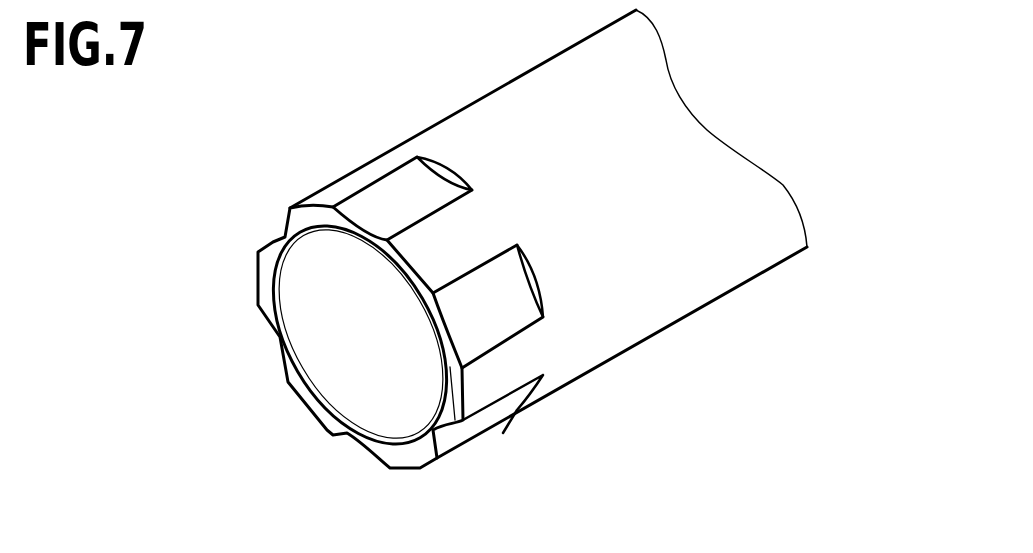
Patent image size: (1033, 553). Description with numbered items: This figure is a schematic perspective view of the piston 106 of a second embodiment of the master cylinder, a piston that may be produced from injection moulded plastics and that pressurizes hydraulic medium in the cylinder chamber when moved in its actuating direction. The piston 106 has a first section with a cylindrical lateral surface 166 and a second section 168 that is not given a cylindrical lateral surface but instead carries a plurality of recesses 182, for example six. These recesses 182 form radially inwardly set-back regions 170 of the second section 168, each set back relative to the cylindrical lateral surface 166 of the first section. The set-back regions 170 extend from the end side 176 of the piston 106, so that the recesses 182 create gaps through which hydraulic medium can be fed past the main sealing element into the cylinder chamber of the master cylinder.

The piston 106 is at (642, 113).
The cylindrical lateral surface 166 is at (490, 123).
The second section 168 is at (343, 190).
The radially inwardly set-back region 170 is at (395, 198).
The end side 176 is at (265, 282).
The recess 182 is at (273, 243).